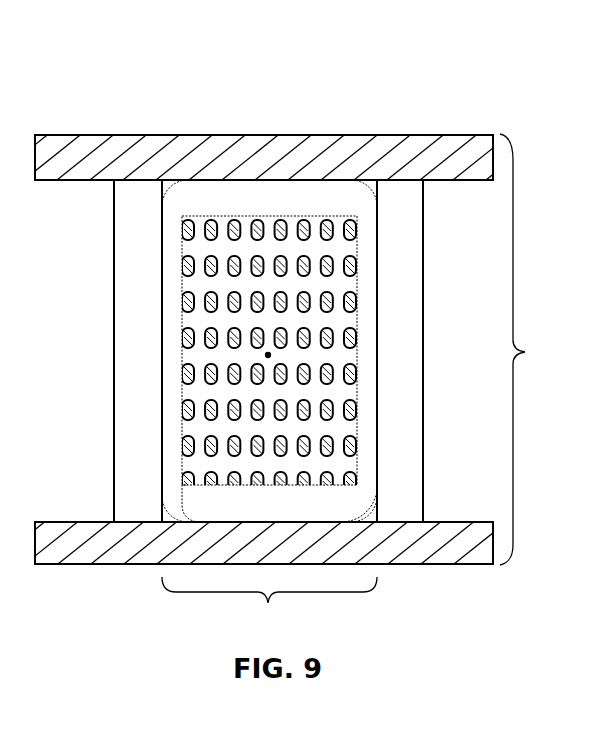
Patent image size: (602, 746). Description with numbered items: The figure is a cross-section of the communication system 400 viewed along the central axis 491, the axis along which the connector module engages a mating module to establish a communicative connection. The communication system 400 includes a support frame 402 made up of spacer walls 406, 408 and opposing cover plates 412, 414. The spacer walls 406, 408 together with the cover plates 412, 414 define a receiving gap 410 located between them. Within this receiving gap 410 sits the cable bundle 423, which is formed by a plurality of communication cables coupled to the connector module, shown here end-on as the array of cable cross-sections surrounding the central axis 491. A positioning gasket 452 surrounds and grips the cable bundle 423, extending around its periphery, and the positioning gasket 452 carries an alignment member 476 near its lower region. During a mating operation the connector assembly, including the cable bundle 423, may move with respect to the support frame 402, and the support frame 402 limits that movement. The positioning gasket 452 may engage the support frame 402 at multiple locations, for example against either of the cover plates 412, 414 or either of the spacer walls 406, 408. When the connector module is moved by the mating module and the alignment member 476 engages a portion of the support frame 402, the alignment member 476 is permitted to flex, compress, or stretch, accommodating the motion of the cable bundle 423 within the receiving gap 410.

The communication system 400 is at (398, 77).
The support frame 402 is at (537, 349).
The spacer wall 406 is at (113, 380).
The spacer wall 408 is at (424, 300).
The receiving gap 410 is at (269, 606).
The cover plate 412 is at (232, 137).
The cover plate 414 is at (453, 565).
The cable bundle 423 is at (201, 214).
The positioning gasket 452 is at (323, 137).
The alignment member 476 is at (208, 501).
The central axis 491 is at (270, 358).